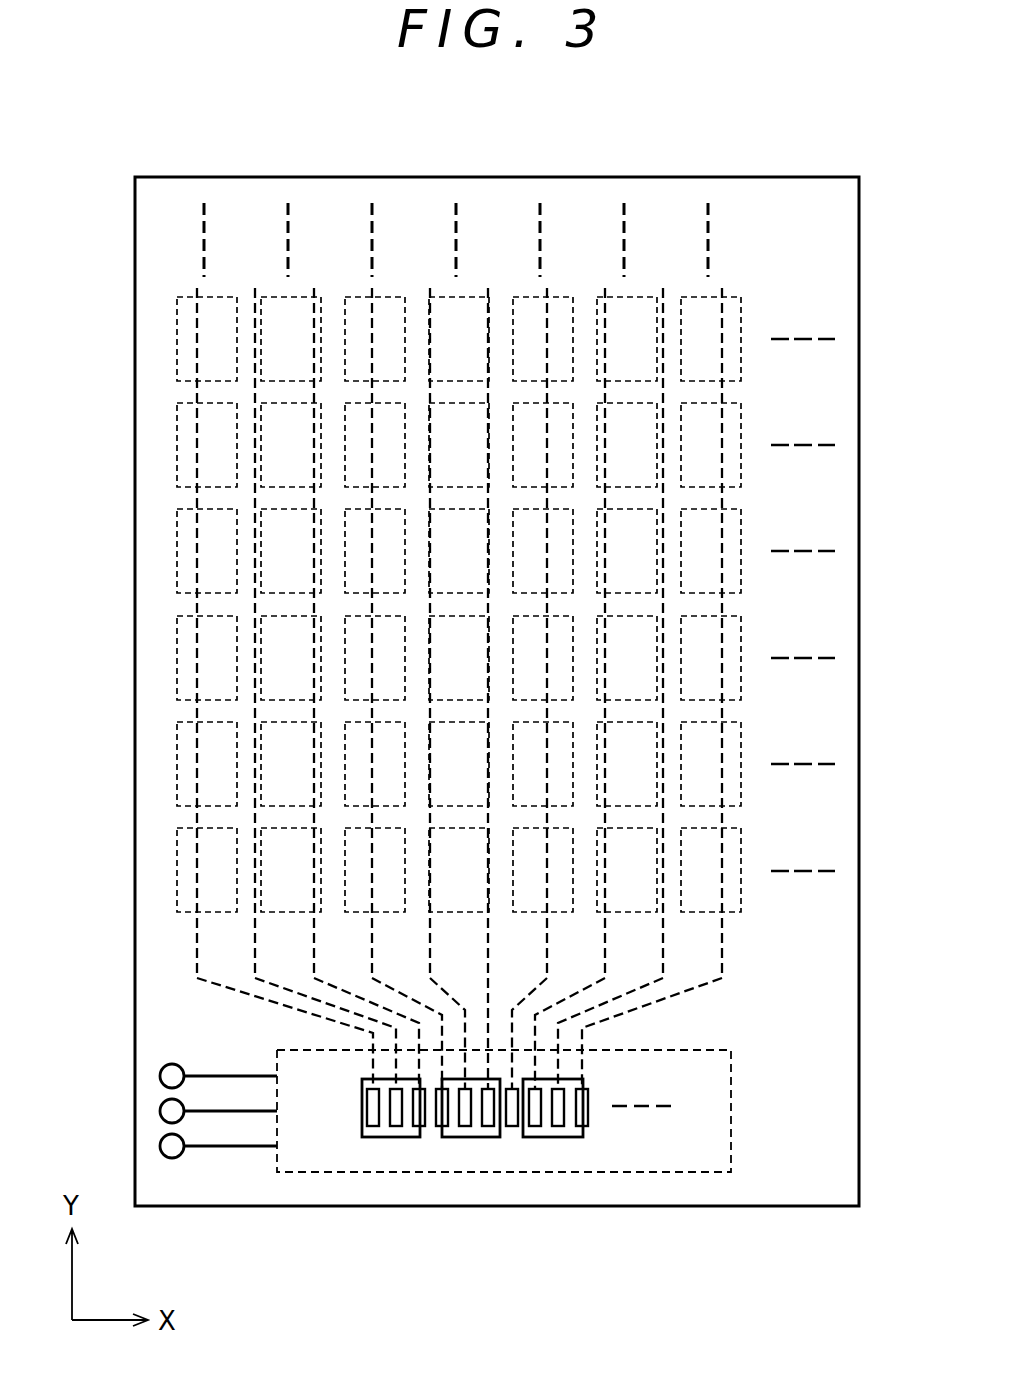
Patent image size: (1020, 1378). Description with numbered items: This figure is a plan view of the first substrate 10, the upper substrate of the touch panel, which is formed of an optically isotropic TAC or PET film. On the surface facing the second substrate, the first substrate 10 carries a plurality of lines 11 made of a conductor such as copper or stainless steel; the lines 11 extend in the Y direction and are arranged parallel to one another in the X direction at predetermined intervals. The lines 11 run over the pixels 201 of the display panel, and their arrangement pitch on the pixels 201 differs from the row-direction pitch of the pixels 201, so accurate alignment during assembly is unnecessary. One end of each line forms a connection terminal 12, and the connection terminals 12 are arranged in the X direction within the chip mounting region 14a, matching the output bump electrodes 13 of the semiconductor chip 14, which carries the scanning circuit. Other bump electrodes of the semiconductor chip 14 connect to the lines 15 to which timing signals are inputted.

The first substrate 10 is at (797, 177).
The lines 11 is at (197, 350).
The pixels 201 is at (739, 855).
The semiconductor chip 14 is at (731, 1108).
The chip mounting region 14a is at (703, 1050).
The output bump electrodes 13 is at (393, 1137).
The connection terminals 12 is at (558, 1126).
The lines to which timing signals are inputted 15 is at (158, 1142).